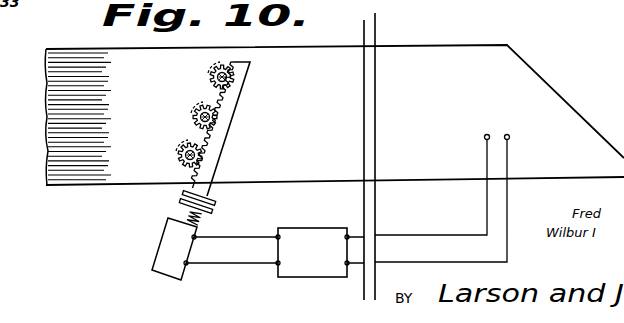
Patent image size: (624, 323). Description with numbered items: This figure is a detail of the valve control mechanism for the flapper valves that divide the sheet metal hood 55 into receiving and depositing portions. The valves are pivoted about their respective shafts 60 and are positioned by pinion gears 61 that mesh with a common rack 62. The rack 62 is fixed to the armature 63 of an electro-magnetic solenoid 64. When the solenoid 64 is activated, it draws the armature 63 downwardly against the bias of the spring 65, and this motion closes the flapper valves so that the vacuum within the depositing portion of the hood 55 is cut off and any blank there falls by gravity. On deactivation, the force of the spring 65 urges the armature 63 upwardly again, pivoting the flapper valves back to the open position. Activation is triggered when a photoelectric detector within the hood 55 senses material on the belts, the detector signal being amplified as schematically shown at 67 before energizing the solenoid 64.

The sheet metal hood 55 is at (545, 80).
The shafts 60 is at (194, 115).
The pinion gears 61 is at (180, 150).
The common rack 62 is at (228, 116).
The armature 63 is at (200, 222).
The electro-magnetic solenoid 64 is at (179, 270).
The spring 65 is at (177, 208).
The amplification 67 is at (309, 278).